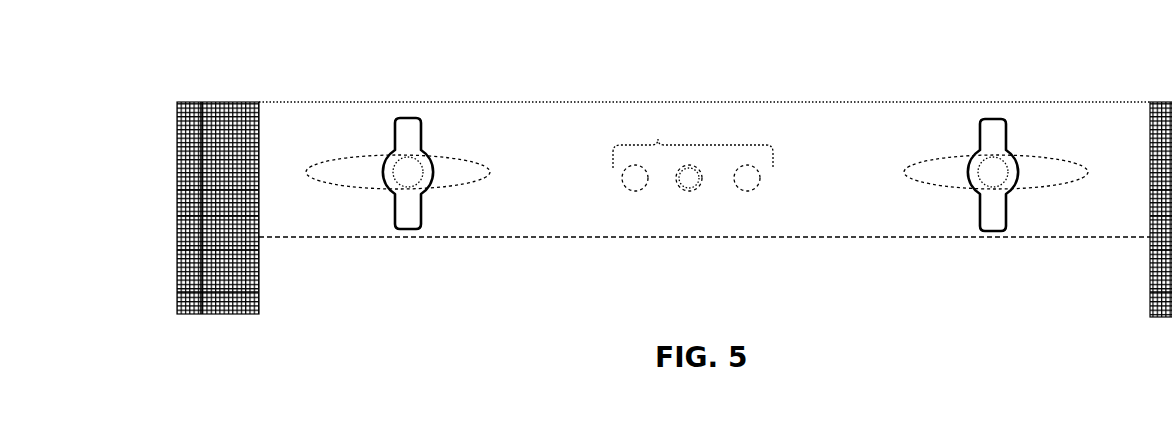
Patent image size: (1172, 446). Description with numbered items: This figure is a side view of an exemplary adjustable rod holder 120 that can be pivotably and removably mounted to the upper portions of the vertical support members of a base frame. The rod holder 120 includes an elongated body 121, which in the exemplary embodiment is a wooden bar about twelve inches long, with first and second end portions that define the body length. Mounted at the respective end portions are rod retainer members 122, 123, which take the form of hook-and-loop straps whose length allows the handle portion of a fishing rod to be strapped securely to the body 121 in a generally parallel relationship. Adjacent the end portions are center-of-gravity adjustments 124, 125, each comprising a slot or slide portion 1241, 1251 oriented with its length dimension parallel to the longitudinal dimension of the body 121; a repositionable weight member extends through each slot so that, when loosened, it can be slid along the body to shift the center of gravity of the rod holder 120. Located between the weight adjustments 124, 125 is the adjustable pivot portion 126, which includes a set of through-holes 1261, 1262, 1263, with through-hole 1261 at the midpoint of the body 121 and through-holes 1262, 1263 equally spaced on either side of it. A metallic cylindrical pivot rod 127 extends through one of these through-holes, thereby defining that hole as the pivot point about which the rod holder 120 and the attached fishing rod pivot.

The adjustable rod holder 120 is at (332, 53).
The elongated body 121 is at (568, 110).
The rod retainer member 122 is at (230, 314).
The rod retainer member 123 is at (1150, 262).
The center-of-gravity adjustment 124 is at (397, 191).
The slot or slide portion 1241 is at (447, 155).
The center-of-gravity adjustment 125 is at (994, 180).
The slot or slide portion 1251 is at (1036, 152).
The adjustable pivot portion 126 is at (658, 139).
The through-hole 1261 is at (635, 186).
The through-hole 1262 is at (688, 184).
The through-hole 1263 is at (745, 192).
The pivot rod 127 is at (693, 172).